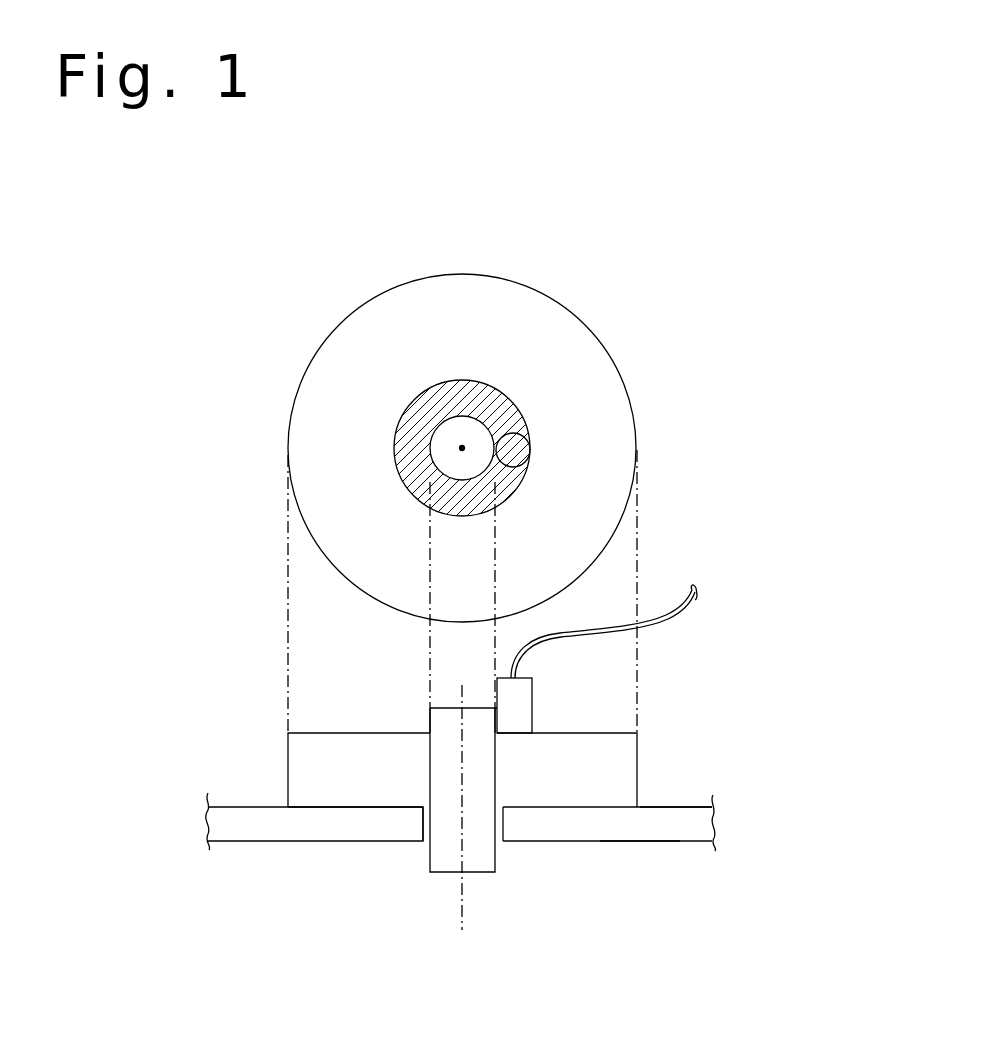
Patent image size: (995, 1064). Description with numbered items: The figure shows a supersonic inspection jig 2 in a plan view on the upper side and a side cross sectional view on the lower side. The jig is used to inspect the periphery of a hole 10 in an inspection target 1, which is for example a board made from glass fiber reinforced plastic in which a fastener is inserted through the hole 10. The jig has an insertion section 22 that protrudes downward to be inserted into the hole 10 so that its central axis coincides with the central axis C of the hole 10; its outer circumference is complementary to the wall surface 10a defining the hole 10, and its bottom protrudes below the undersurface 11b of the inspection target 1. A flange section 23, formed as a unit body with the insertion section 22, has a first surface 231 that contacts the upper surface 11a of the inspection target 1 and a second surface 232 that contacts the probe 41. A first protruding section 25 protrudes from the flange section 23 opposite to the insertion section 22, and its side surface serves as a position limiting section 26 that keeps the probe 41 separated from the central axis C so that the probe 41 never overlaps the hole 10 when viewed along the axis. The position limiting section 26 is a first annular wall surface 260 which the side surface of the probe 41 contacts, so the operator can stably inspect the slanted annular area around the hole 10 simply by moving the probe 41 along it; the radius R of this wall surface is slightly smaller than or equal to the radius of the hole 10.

The inspection target 1 is at (687, 828).
The supersonic inspection jig 2 is at (625, 443).
The hole 10 is at (495, 854).
The inner wall of through hole 10a is at (500, 832).
The upper surface 11a is at (697, 807).
The undersurface 11b is at (637, 841).
The insertion section 22 is at (430, 862).
The flange section 23 is at (630, 783).
The first protruding section 25 is at (470, 425).
The position limiting section 26 is at (508, 430).
The probe 41 is at (520, 449).
The first surface 231 is at (305, 808).
The second surface 232 is at (432, 698).
The first annular wall surface 260 is at (489, 711).
The central axis C is at (462, 448).
The radius R is at (491, 490).